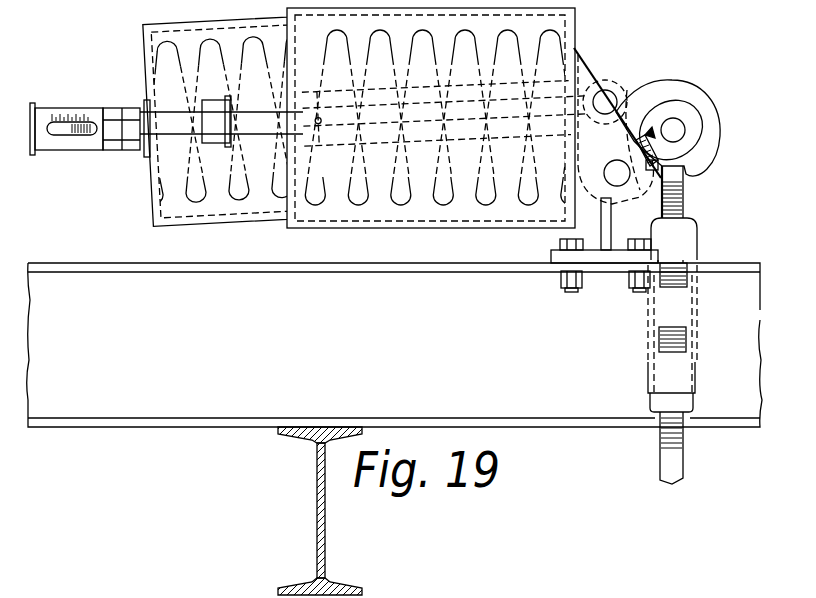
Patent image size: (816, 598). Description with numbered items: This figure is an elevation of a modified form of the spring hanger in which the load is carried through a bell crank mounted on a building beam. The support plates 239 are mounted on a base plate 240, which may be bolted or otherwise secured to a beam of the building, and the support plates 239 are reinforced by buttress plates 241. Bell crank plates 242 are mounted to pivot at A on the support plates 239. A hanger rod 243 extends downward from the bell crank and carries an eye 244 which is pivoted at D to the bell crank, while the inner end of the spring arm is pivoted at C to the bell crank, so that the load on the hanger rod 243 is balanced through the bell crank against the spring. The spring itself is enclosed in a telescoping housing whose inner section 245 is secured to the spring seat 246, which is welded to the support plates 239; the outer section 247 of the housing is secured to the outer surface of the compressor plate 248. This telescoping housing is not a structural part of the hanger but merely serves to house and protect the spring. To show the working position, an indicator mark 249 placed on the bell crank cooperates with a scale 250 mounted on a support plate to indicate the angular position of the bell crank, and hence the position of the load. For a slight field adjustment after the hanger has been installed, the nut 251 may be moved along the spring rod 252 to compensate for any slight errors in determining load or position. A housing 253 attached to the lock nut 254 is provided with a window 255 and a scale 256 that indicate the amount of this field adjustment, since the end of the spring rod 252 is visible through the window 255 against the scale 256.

The support plates 239 is at (657, 91).
The base plate 240 is at (591, 260).
The buttress plates 241 is at (599, 238).
The bell crank plates 242 is at (703, 114).
The hanger rod 243 is at (660, 460).
The eye 244 is at (700, 97).
The inner section 245 is at (412, 209).
The spring seat 246 is at (578, 27).
The outer section 247 is at (202, 229).
The compressor plate 248 is at (152, 53).
The indicator mark 249 is at (703, 152).
The scale 250 is at (688, 166).
The nut 251 is at (136, 108).
The spring rod 252 is at (83, 134).
The housing 253 is at (40, 115).
The lock nut 254 is at (114, 143).
The window 255 is at (60, 133).
The scale 256 is at (67, 107).
The pivot A is at (626, 178).
The pivot C is at (619, 93).
The pivot D is at (680, 133).